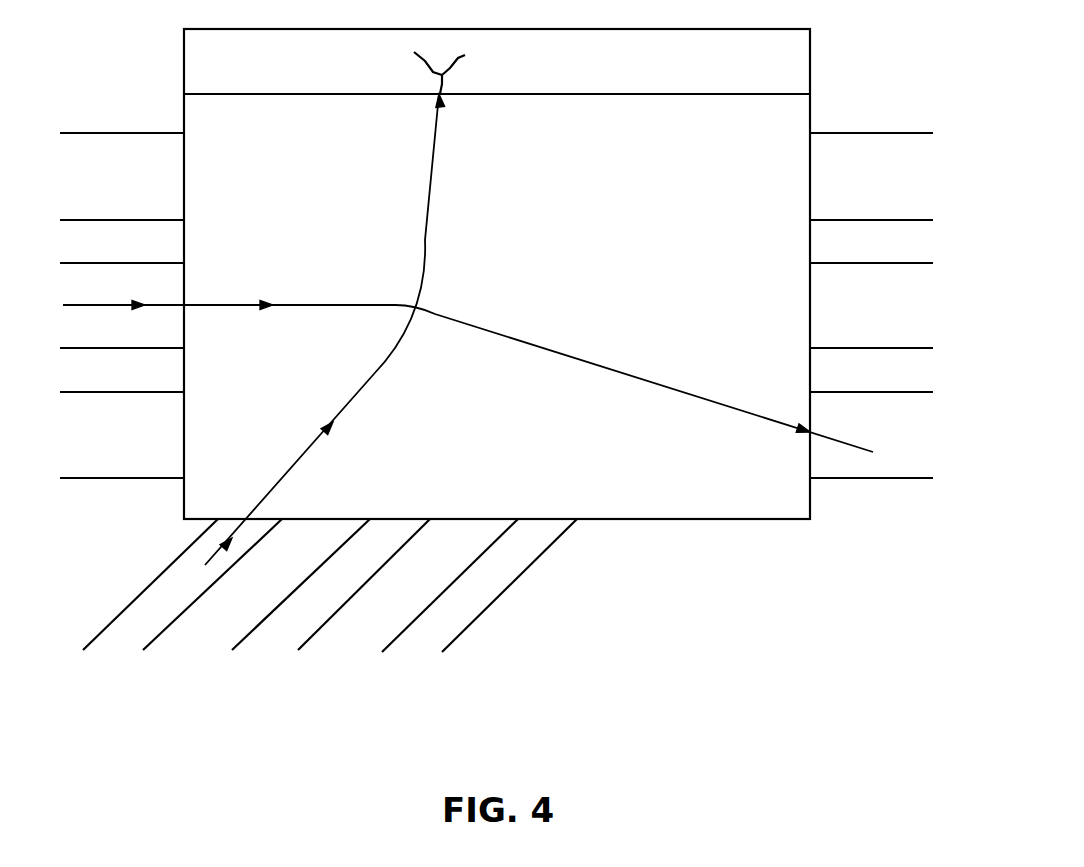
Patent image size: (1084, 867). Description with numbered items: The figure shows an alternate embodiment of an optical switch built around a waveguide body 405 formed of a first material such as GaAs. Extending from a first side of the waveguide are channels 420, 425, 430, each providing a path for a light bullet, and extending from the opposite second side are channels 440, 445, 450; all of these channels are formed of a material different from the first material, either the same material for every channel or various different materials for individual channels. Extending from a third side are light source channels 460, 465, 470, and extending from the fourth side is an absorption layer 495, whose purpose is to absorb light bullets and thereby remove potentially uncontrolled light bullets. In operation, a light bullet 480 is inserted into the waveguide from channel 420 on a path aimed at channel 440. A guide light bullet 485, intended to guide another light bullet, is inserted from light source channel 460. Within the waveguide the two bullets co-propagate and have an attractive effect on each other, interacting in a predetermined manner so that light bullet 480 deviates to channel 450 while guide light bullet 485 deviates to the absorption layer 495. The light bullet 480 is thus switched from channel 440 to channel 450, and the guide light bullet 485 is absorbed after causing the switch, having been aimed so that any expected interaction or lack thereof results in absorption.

The optical body / substrate 405 is at (597, 162).
The absorption layer 495 is at (781, 75).
The channel 420 is at (147, 297).
The channel 425 is at (147, 190).
The channel 430 is at (147, 446).
The channel 440 is at (897, 319).
The channel 445 is at (897, 192).
The channel 450 is at (897, 433).
The light source channel 460 is at (168, 600).
The light source channel 465 is at (322, 600).
The light source channel 470 is at (472, 600).
The light bullet 480 is at (297, 305).
The guide light bullet 485 is at (367, 388).